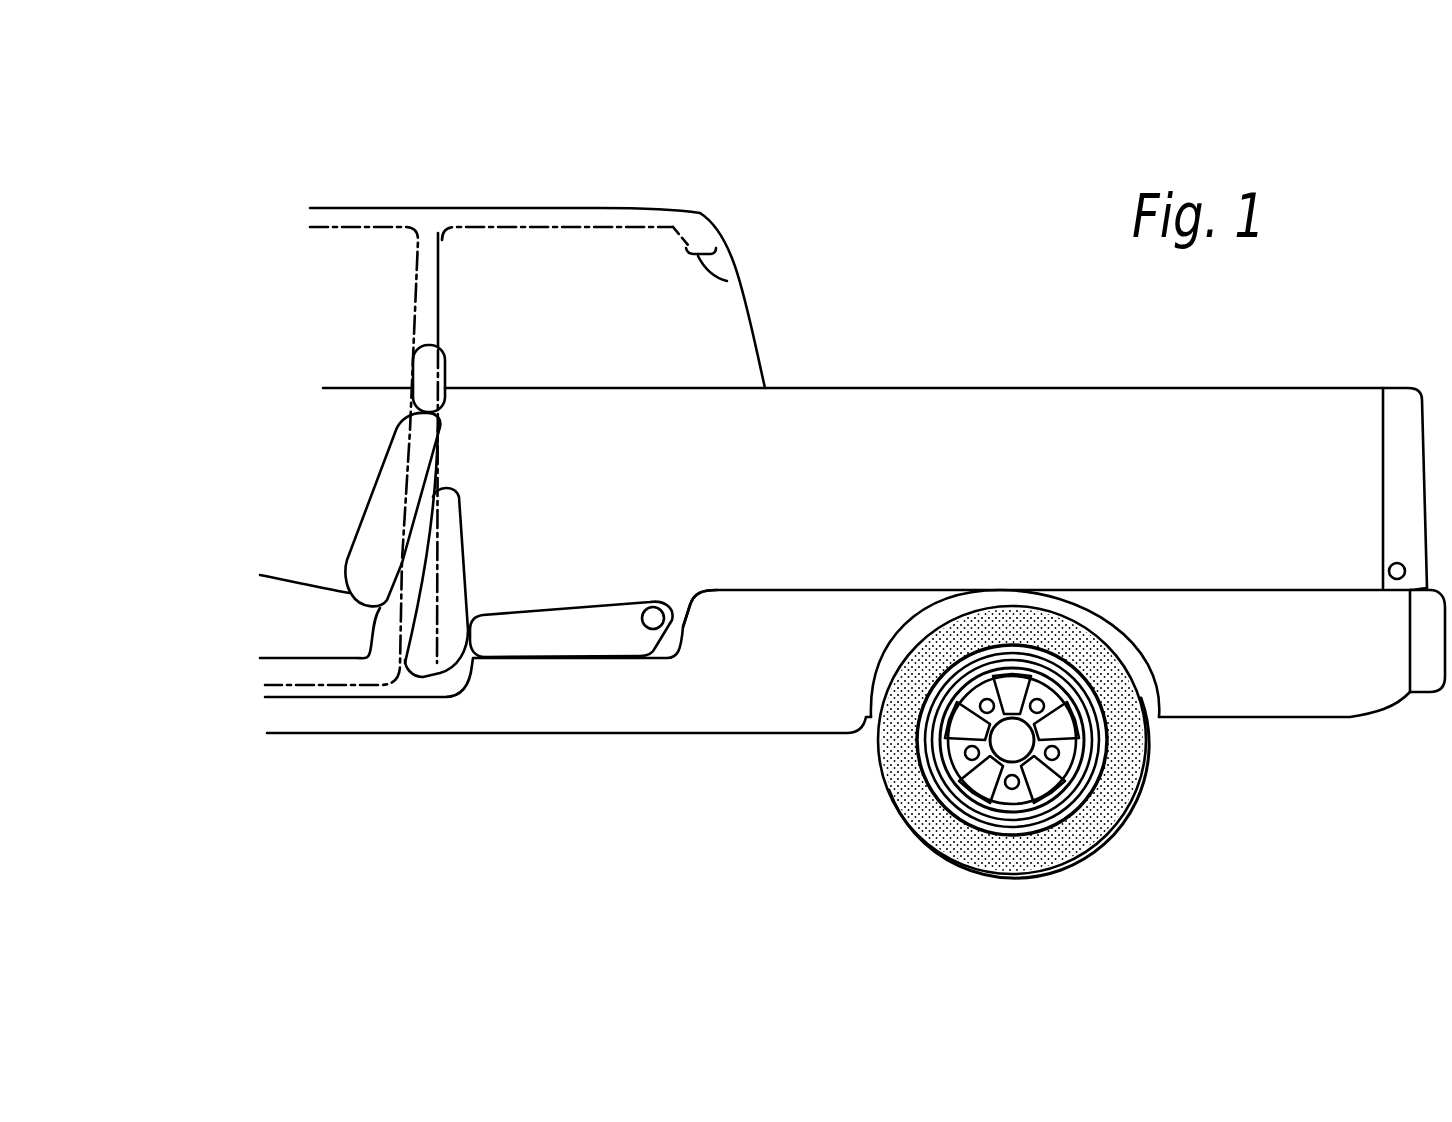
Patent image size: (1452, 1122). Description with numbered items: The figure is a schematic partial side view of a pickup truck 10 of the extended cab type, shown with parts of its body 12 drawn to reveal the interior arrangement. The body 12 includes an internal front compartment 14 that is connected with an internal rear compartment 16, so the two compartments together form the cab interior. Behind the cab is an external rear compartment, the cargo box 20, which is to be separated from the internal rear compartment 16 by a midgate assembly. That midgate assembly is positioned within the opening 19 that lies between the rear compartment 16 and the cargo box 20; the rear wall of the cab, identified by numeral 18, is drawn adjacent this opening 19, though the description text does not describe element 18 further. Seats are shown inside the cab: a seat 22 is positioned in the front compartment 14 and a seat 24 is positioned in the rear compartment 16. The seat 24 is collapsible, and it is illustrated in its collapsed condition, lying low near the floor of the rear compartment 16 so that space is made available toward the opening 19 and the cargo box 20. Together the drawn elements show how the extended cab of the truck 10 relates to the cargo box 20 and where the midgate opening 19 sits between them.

The pickup truck 10 is at (287, 353).
The body 12 is at (431, 217).
The internal front compartment 14 is at (367, 252).
The internal rear compartment 16 is at (625, 252).
The rear cab wall 18 is at (701, 213).
The opening 19 is at (745, 281).
The cargo box 20 is at (977, 407).
The seat 22 is at (373, 485).
The seat 24 is at (610, 603).